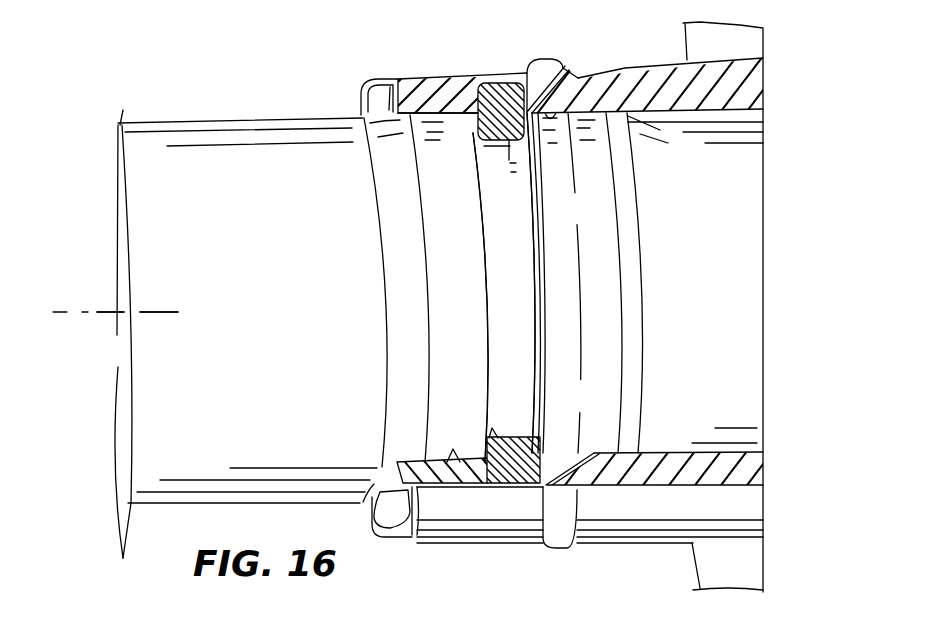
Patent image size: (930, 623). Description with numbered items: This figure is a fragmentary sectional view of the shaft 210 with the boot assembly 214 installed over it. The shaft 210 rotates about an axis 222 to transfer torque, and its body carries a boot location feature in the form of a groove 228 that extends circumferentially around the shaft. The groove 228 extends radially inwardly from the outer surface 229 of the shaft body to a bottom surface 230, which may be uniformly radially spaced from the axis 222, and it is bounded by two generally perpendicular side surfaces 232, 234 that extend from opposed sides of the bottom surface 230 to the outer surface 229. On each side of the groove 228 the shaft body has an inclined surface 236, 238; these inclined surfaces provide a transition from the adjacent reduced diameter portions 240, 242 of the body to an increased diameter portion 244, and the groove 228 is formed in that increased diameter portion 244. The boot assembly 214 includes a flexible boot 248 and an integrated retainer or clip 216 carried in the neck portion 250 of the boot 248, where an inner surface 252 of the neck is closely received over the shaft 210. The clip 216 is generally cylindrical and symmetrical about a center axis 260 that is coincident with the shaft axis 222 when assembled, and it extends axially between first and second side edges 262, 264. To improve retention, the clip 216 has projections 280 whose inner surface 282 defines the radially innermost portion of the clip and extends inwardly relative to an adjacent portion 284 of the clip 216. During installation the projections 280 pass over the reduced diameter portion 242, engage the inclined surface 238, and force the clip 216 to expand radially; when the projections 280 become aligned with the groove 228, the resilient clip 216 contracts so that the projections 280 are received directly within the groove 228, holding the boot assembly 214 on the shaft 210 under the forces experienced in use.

The shaft 210 is at (150, 118).
The boot assembly 214 is at (766, 73).
The clip 216 is at (390, 472).
The axis 222 is at (64, 315).
The center axis 260 is at (65, 336).
The groove 228 is at (547, 253).
The outer surface 229 is at (440, 112).
The bottom surface 230 is at (523, 313).
The side surface 232 is at (485, 317).
The side surface 234 is at (527, 223).
The inclined surface 236 is at (403, 325).
The inclined surface 238 is at (610, 362).
The reduced diameter portion 240 is at (252, 160).
The reduced diameter portion 242 is at (750, 183).
The increased diameter portion 244 is at (465, 382).
The boot 248 is at (652, 85).
The neck portion 250 is at (430, 88).
The inner surface 252 is at (572, 108).
The first side edge 262 is at (360, 92).
The second side edge 264 is at (543, 455).
The projection 280 is at (493, 143).
The inner surface 282 is at (510, 145).
The adjacent portion 284 is at (438, 483).